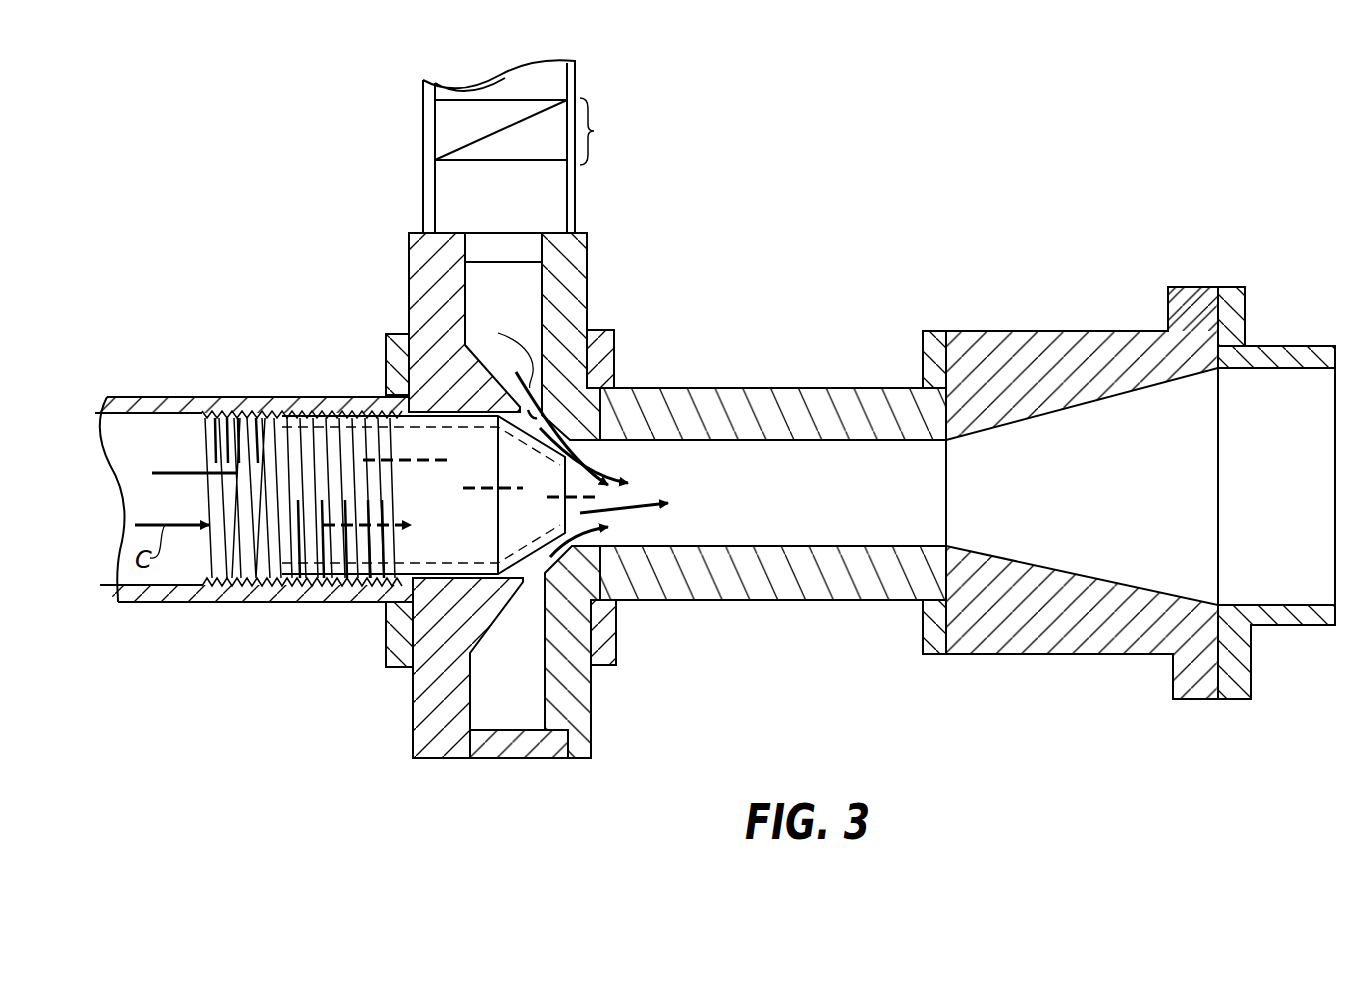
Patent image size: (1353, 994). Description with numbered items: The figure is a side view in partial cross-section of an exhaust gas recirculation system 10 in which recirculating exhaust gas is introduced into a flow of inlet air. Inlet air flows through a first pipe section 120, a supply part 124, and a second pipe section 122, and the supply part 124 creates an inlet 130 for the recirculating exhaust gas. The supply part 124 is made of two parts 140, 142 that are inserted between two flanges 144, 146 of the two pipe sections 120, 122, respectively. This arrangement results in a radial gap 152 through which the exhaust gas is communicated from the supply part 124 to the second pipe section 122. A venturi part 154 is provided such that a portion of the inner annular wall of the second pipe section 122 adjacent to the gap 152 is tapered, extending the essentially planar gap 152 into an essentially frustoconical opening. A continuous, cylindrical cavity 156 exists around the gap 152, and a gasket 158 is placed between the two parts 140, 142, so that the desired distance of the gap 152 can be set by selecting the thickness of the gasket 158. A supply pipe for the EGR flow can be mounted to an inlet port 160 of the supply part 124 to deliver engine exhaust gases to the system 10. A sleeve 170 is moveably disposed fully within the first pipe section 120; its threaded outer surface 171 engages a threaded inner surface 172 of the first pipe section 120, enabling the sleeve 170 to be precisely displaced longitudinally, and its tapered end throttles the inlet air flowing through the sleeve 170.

The system 10 is at (722, 318).
The first pipe section 120 is at (180, 403).
The second pipe section 122 is at (722, 595).
The supply part 124 is at (422, 283).
The inlet 130 is at (622, 428).
The first part of supply part 140 is at (455, 762).
The second part of supply part 142 is at (578, 748).
The flange 144 is at (385, 667).
The flange 146 is at (605, 665).
The radial gap 152 is at (565, 350).
The venturi part 154 is at (623, 388).
The cylindrical cavity 156 is at (510, 688).
The gasket 158 is at (528, 250).
The inlet port 160 is at (487, 232).
The sleeve 170 is at (332, 455).
The threaded outer surface 171 is at (345, 605).
The threaded inner surface 172 is at (243, 438).